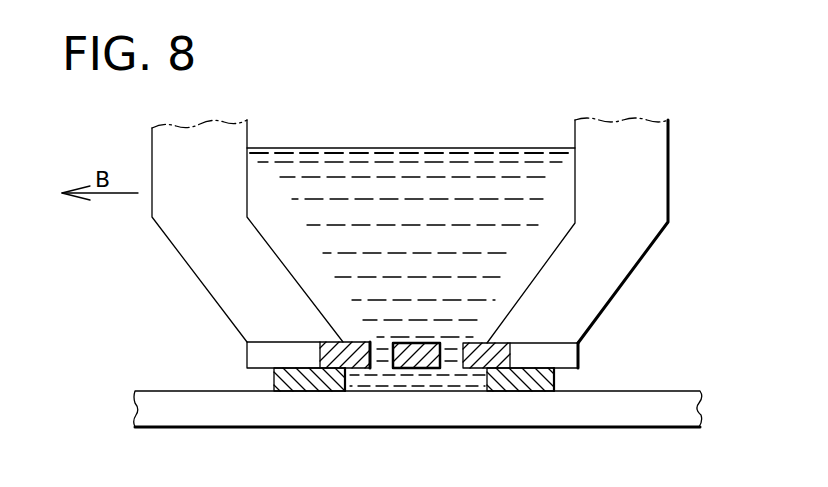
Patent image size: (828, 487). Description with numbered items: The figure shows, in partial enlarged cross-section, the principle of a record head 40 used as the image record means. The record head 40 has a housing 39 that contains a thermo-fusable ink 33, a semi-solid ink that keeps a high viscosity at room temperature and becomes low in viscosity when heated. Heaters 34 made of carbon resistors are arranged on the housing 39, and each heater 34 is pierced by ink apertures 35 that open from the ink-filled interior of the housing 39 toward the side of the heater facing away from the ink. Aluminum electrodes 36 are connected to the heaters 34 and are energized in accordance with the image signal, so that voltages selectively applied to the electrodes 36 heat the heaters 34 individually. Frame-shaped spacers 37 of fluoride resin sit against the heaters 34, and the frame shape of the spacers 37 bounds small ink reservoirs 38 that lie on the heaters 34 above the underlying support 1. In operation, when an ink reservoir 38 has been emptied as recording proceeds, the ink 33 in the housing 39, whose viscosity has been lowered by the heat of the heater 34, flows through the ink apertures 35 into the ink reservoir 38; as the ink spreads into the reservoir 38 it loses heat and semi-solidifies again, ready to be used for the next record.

The substrate 1 is at (633, 412).
The ink 33 is at (515, 165).
The heater 34 is at (427, 367).
The ink aperture 35 is at (385, 348).
The aluminum electrode 36 is at (247, 352).
The spacer 37 is at (274, 381).
The ink reservoir 38 is at (458, 383).
The housing 39 is at (655, 173).
The record head 40 is at (443, 200).